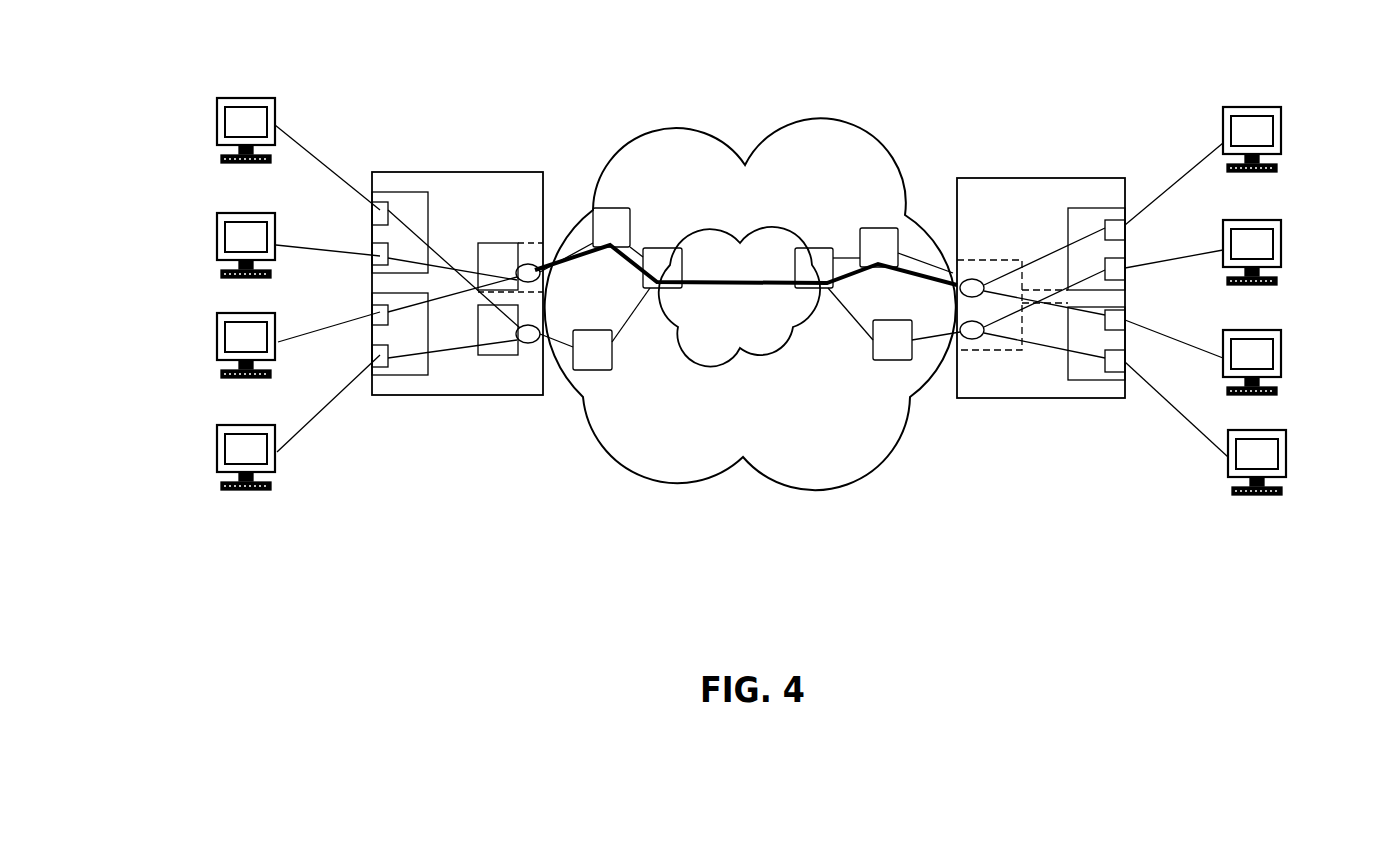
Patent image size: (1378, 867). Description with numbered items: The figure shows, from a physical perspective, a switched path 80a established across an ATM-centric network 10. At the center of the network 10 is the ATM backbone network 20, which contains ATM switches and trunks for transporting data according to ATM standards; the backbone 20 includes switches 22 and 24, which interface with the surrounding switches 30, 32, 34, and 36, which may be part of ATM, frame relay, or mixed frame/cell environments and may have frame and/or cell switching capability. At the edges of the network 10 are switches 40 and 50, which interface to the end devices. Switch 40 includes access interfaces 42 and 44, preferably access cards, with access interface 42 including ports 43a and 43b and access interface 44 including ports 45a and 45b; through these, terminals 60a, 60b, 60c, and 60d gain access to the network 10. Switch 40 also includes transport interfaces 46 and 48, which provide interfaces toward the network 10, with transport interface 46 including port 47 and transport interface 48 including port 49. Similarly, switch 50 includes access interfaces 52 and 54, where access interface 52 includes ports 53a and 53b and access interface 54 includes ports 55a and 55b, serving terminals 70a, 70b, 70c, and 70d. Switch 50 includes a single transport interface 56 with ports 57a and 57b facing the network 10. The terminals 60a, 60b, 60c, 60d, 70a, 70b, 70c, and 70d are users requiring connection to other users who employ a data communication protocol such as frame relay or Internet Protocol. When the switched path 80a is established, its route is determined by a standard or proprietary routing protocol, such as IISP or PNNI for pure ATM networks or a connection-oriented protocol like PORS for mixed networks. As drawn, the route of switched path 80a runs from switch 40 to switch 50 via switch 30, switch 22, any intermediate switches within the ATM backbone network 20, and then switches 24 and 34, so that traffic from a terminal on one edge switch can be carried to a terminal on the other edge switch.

The ATM-centric network 10 is at (759, 449).
The ATM backbone network 20 is at (750, 325).
The switch 22 is at (673, 278).
The switch 24 is at (825, 278).
The switch 30 is at (622, 237).
The switch 32 is at (603, 360).
The switch 34 is at (889, 257).
The switch 36 is at (903, 350).
The switch 40 is at (468, 221).
The access interface 42 is at (411, 243).
The port 43a is at (372, 210).
The port 43b is at (372, 250).
The access interface 44 is at (411, 344).
The port 45a is at (372, 300).
The port 45b is at (372, 347).
The transport interface 46 is at (503, 272).
The port 47 is at (520, 246).
The transport interface 48 is at (503, 332).
The port 49 is at (524, 343).
The switch 50 is at (1052, 222).
The access interface 52 is at (1103, 257).
The port 53a is at (1127, 232).
The port 53b is at (1127, 272).
The access interface 54 is at (1103, 346).
The port 55a is at (1127, 330).
The port 55b is at (1118, 375).
The transport interface 56 is at (1009, 311).
The port 57a is at (975, 279).
The port 57b is at (975, 339).
The terminal 60a is at (217, 128).
The terminal 60b is at (217, 243).
The terminal 60c is at (217, 343).
The terminal 60d is at (217, 455).
The terminal 70a is at (1281, 135).
The terminal 70b is at (1281, 248).
The terminal 70c is at (1281, 358).
The terminal 70d is at (1286, 458).
The switched path 80a is at (740, 283).